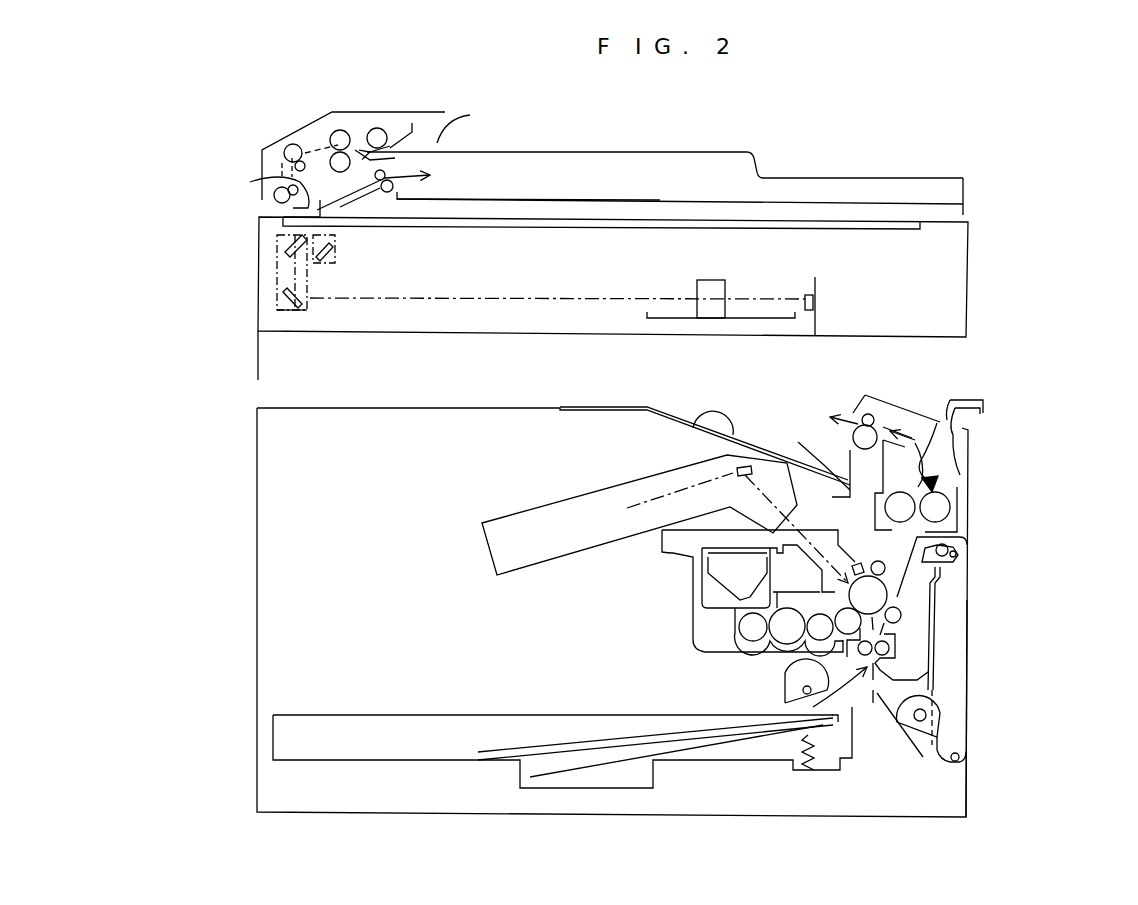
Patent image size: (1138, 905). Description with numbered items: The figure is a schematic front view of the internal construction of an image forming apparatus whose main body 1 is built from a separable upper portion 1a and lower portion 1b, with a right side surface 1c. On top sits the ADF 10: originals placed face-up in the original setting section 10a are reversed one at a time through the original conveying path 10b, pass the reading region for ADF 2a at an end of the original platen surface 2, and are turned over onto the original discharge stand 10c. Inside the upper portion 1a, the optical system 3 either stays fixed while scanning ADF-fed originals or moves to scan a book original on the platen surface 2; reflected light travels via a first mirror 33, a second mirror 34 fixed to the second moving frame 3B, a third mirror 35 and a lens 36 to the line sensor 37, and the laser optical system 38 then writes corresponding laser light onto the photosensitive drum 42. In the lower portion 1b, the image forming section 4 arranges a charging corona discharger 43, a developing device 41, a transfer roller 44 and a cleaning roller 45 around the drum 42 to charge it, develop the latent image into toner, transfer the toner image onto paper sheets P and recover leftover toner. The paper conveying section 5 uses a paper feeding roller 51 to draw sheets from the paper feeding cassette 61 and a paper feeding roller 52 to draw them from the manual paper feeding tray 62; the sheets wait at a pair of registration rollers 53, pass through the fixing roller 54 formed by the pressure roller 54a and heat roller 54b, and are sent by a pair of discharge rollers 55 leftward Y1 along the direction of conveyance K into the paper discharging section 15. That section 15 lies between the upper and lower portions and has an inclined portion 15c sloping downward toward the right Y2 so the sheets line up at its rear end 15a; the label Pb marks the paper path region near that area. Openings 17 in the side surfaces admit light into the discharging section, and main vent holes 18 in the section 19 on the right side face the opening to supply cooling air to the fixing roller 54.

The main body of the image forming apparatus 1 is at (985, 265).
The upper portion 1a is at (258, 268).
The lower portion 1b is at (257, 545).
The right side surface 1c is at (968, 452).
The original platen surface 2 is at (840, 222).
The reading region for ADF 2a is at (250, 182).
The optical system 3 is at (718, 258).
The second moving frame 3B is at (277, 280).
The image forming section 4 is at (683, 578).
The paper conveying section 5 is at (853, 683).
The ADF 10 is at (277, 130).
The original setting section 10a is at (603, 152).
The original conveying path 10b is at (470, 115).
The original discharge stand 10c is at (660, 200).
The paper discharging section 15 is at (403, 405).
The rear end in the direction of conveyance of the paper discharging section 15a is at (850, 450).
The inclined portion 15c is at (700, 424).
The opening 17 is at (278, 373).
The main vent holes 18 is at (983, 406).
The section 19 is at (937, 423).
The first mirror 33 is at (330, 253).
The second mirror 34 is at (285, 243).
The third mirror 35 is at (280, 318).
The lens 36 is at (711, 290).
The line sensor 37 is at (810, 295).
The laser optical system 38 is at (512, 515).
The developing device 41 is at (735, 623).
The photosensitive drum 42 is at (870, 594).
The charging corona discharger 43 is at (852, 566).
The transfer roller 44 is at (902, 615).
The cleaning roller 45 is at (885, 571).
The paper feeding roller 51 is at (785, 690).
The paper feeding roller 52 is at (940, 715).
The pair of registration rollers 53 is at (885, 650).
The fixing roller 54 is at (999, 508).
The pressure roller 54a is at (900, 507).
The heat roller 54b is at (935, 507).
The pair of discharge rollers 55 is at (872, 432).
The paper feeding cassette 61 is at (380, 760).
The manual paper feeding tray 62 is at (968, 690).
The direction of conveyance K is at (853, 413).
The paper sheets P is at (597, 403).
The paper path Pb is at (805, 462).
The leftward direction Y1 is at (1058, 825).
The rightward direction Y2 is at (1058, 787).